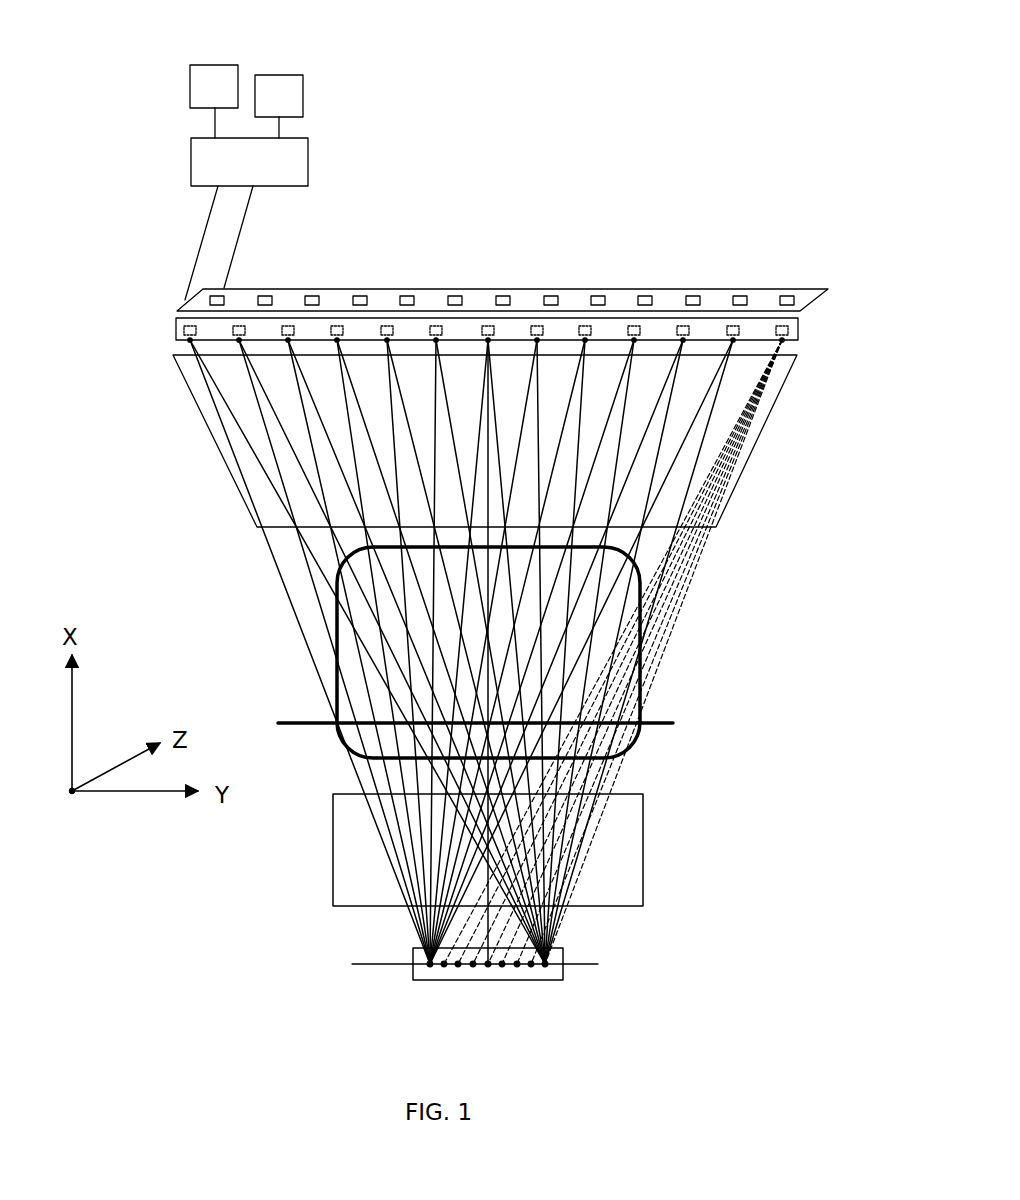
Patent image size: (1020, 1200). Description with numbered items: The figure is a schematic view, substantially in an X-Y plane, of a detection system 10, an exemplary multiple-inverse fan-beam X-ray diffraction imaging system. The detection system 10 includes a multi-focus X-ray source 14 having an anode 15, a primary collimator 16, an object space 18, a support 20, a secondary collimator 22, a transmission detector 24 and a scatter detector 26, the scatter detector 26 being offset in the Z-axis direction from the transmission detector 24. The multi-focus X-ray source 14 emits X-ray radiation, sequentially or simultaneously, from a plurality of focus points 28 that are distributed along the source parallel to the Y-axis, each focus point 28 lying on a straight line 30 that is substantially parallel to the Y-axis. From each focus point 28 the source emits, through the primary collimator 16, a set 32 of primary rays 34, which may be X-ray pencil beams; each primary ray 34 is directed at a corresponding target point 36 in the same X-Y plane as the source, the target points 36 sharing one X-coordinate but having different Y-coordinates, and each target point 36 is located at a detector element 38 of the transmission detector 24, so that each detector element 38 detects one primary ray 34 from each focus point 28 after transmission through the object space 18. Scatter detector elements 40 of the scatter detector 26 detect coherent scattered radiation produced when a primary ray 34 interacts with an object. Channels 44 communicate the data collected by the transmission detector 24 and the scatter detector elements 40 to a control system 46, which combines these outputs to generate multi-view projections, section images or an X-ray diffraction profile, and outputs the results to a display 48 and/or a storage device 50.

The detection system 10 is at (182, 36).
The multi-focus X-ray source 14 is at (540, 982).
The anode 15 is at (511, 980).
The primary collimator 16 is at (333, 890).
The object space 18 is at (636, 743).
The support 20 is at (312, 725).
The secondary collimator 22 is at (745, 470).
The transmission detector 24 is at (800, 330).
The scatter detector 26 is at (813, 303).
The focus points 28 is at (488, 967).
The straight line 30 is at (380, 966).
The set of primary rays 32 is at (385, 922).
The primary rays 34 is at (672, 635).
The target points 36 is at (537, 340).
The detector elements 38 is at (190, 331).
The scatter detector elements 40 is at (407, 300).
The channels 44 is at (200, 240).
The control system 46 is at (265, 174).
The display 48 is at (305, 91).
The storage device 50 is at (190, 93).